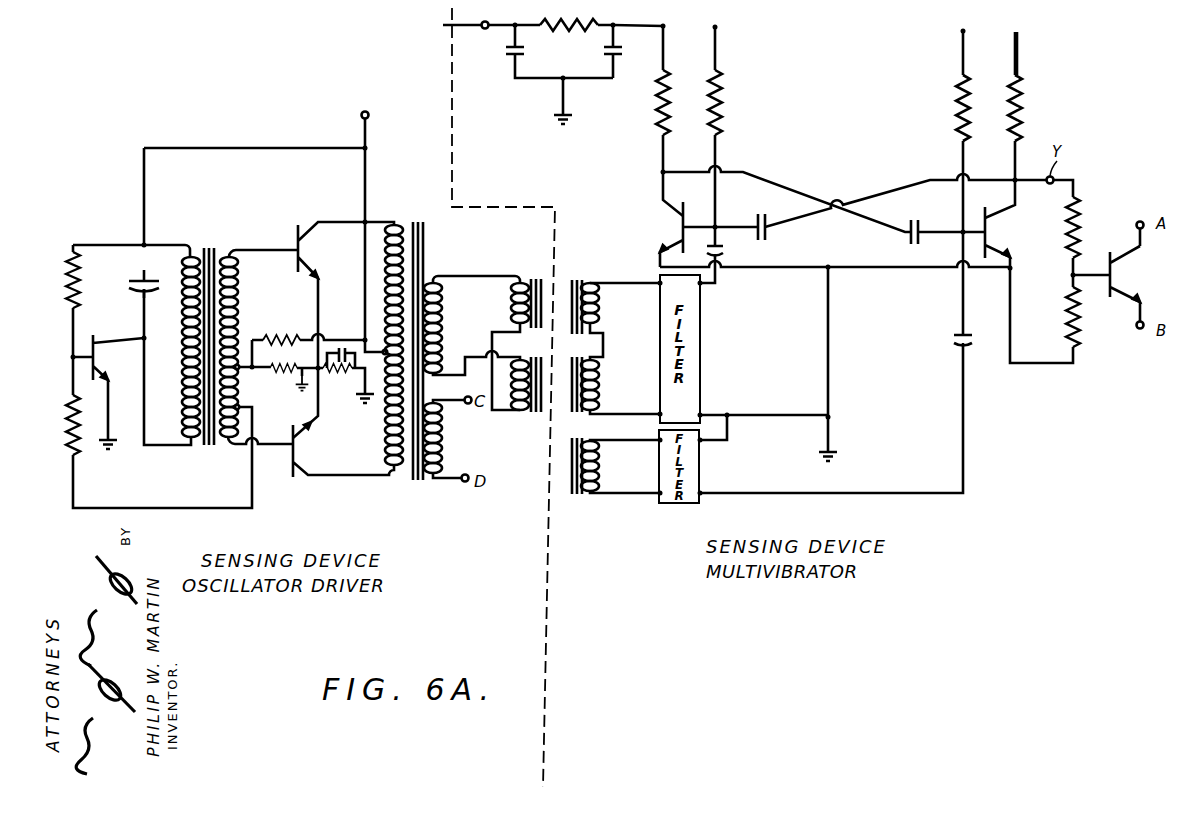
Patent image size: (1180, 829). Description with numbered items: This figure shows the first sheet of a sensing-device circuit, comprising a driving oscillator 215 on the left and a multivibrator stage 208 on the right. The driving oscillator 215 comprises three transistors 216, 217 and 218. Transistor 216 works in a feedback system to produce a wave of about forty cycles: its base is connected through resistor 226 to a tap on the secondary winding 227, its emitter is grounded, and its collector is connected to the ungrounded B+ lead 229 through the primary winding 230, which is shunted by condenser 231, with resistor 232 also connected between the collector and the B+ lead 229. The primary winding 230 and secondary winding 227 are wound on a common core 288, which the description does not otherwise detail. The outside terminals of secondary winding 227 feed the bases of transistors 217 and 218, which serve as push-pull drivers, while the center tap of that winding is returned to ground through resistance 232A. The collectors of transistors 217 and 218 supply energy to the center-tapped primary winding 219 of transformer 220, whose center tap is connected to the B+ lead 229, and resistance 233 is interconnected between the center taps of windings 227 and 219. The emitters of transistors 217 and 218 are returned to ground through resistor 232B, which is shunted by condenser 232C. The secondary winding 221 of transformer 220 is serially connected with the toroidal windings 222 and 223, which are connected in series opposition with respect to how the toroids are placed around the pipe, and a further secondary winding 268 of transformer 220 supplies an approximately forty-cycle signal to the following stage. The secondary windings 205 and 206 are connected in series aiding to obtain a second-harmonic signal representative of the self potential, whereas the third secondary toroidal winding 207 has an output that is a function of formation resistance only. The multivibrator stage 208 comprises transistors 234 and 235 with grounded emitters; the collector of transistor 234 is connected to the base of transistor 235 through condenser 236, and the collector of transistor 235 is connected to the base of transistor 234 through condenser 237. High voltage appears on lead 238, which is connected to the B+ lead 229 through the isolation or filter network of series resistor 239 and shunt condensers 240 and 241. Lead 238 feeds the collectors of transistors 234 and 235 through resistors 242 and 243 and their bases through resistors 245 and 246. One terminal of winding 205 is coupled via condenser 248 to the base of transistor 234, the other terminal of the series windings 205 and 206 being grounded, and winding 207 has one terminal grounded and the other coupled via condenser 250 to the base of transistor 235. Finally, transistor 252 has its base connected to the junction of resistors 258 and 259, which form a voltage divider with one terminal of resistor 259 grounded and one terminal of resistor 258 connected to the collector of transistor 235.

The secondary winding 205 is at (600, 311).
The secondary winding 206 is at (600, 383).
The third secondary toroidal winding 207 is at (600, 466).
The multivibrator stage 208 is at (1030, 52).
The driving oscillator 215 is at (186, 146).
The transistor 216 is at (98, 336).
The transistor 217 is at (301, 224).
The transistor 218 is at (291, 470).
The primary winding 219 is at (384, 454).
The transformer 220 is at (416, 216).
The secondary winding 221 is at (443, 312).
The toroidal winding 222 is at (510, 316).
The toroidal winding 223 is at (521, 411).
The resistor 226 is at (78, 453).
The secondary winding 227 is at (253, 244).
The B+ lead 229 is at (366, 110).
The primary winding 230 is at (182, 396).
The condenser 231 is at (148, 279).
The resistor 232 is at (81, 290).
The resistance 232A is at (286, 372).
The resistor 232B is at (337, 373).
The condenser 232C is at (341, 347).
The resistance 233 is at (291, 338).
The transistor 234 is at (699, 196).
The transistor 235 is at (984, 213).
The condenser 236 is at (908, 237).
The condenser 237 is at (769, 230).
The lead 238 is at (655, 28).
The series resistor 239 is at (568, 32).
The shunt condenser 240 is at (506, 52).
The shunt condenser 241 is at (619, 58).
The resistor 242 is at (660, 132).
The resistor 243 is at (1024, 110).
The resistor 245 is at (724, 116).
The resistor 246 is at (955, 120).
The condenser 248 is at (724, 252).
The condenser 250 is at (952, 339).
The transistor 252 is at (1108, 257).
The resistor 258 is at (1082, 200).
The resistor 259 is at (1081, 348).
The secondary winding 268 is at (443, 435).
The transformer core 288 is at (209, 242).